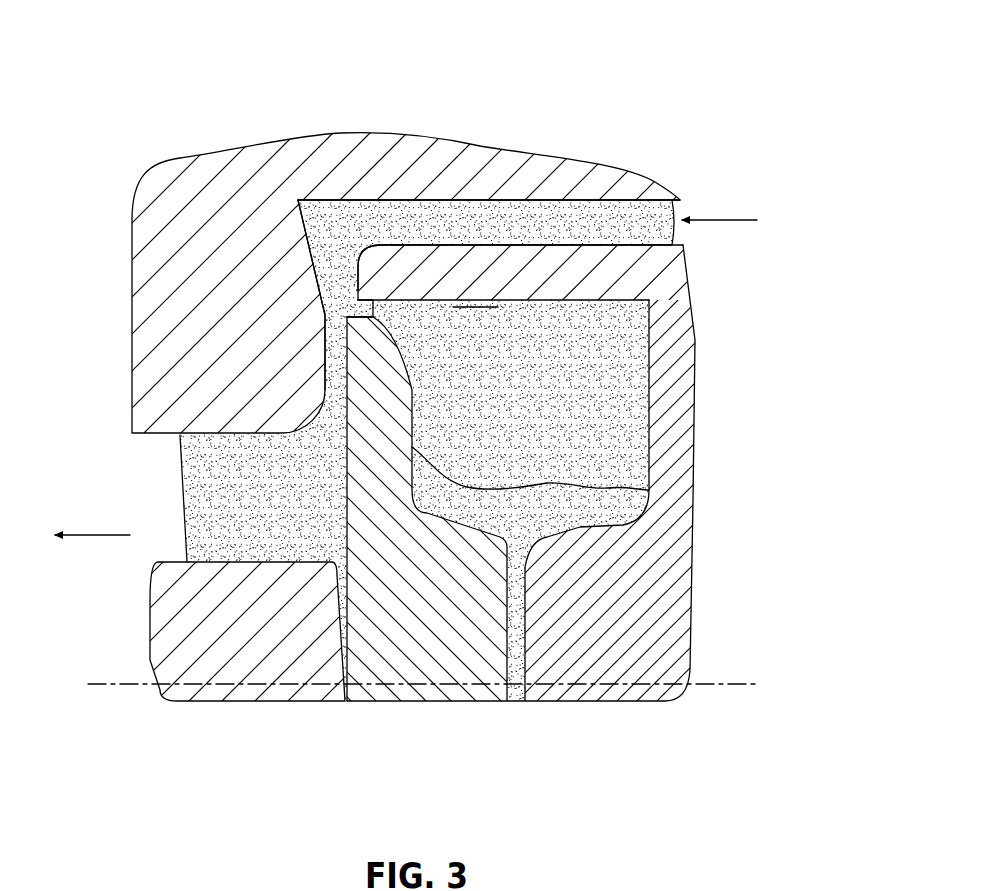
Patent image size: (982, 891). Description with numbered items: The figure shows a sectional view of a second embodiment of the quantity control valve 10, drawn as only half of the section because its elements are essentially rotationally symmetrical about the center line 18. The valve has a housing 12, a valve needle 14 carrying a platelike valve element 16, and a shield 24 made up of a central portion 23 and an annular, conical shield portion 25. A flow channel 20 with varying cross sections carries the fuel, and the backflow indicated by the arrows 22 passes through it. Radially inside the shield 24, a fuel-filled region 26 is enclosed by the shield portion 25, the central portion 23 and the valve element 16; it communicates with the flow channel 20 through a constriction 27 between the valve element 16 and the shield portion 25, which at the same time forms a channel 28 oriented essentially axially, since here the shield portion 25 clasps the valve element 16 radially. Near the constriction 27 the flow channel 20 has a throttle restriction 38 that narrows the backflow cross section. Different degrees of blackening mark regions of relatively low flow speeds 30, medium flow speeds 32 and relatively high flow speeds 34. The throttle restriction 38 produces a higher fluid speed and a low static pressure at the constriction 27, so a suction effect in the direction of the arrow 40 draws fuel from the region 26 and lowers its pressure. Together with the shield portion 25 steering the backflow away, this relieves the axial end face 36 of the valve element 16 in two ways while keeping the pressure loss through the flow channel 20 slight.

The quantity control valve 10 is at (688, 100).
The housing 12 is at (175, 203).
The valve needle 14 is at (173, 650).
The valve element 16 is at (433, 663).
The center line 18 is at (745, 684).
The flow channel 20 is at (589, 197).
The arrows 22 is at (725, 220).
The central portion 23 is at (650, 593).
The shield 24 is at (710, 472).
The shield portion 25 is at (423, 272).
The region 26 is at (620, 428).
The constriction 27 is at (378, 297).
The channel 28 is at (360, 285).
The relatively low flow speeds 30 is at (318, 213).
The medium flow speeds 32 is at (312, 232).
The relatively high flow speeds 34 is at (327, 317).
The axial end face 36 is at (605, 487).
The throttle restriction 38 is at (316, 307).
The arrow 40 is at (397, 307).